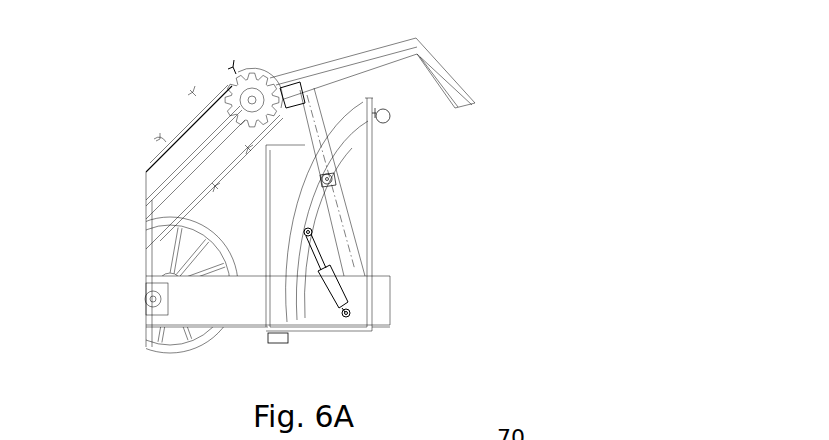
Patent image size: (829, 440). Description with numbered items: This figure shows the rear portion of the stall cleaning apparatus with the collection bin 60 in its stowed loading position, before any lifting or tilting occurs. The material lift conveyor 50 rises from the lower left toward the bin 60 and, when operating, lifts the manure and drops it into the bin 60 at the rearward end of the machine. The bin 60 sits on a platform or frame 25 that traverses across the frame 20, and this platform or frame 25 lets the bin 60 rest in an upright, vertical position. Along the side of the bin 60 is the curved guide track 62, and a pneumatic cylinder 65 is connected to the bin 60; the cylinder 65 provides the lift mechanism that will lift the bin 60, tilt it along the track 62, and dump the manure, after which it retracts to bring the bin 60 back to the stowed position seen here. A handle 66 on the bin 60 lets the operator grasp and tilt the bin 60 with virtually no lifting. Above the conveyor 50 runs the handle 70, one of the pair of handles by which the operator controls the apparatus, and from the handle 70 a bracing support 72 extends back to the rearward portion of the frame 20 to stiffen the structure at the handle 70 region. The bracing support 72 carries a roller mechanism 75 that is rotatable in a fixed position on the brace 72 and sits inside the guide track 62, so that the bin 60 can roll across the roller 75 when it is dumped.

The frame assembly 20 is at (190, 320).
The platform or frame 25 is at (283, 346).
The material lift conveyor 50 is at (190, 133).
The collection bin 60 is at (368, 228).
The guide track 62 is at (297, 222).
The pneumatic cylinder 65 is at (340, 295).
The handle 66 is at (383, 127).
The handles 70 is at (435, 70).
The bracing support 72 is at (310, 112).
The roller mechanism 75 is at (325, 185).